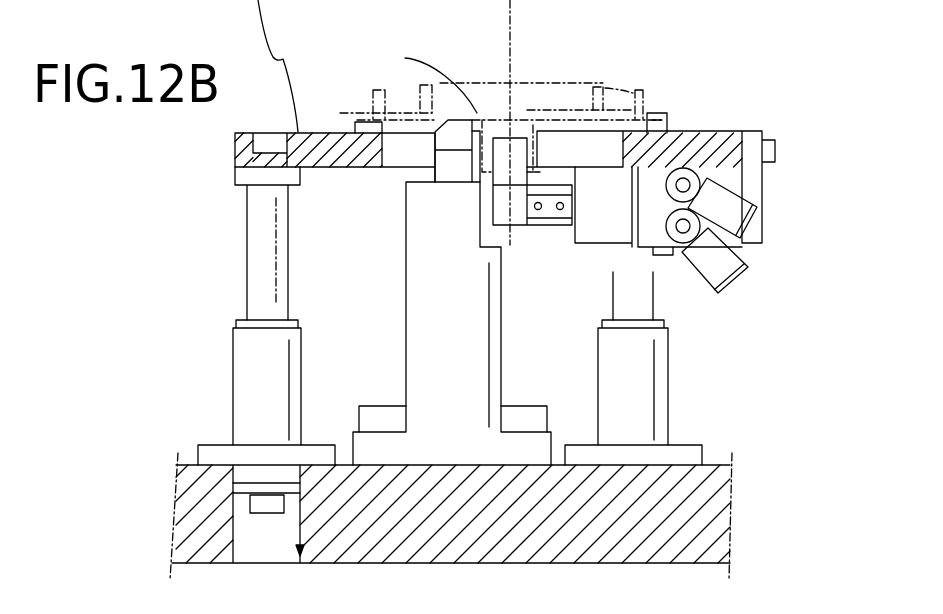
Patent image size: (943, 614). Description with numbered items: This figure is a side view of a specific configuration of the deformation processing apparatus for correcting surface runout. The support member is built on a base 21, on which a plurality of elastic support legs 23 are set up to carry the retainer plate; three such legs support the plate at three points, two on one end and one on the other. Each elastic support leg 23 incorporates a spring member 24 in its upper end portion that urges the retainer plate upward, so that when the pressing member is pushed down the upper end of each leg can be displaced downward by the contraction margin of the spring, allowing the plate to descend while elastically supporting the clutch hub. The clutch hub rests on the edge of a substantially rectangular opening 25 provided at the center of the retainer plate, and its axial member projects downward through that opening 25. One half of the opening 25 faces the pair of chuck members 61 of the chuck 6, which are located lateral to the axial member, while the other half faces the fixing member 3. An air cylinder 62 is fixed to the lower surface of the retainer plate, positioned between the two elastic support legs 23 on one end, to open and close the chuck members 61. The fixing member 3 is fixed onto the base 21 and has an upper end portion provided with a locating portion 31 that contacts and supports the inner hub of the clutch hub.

The fixing member 3 is at (405, 303).
The chuck 6 is at (694, 171).
The base 21 is at (728, 527).
The elastic support legs 23 is at (233, 370).
The spring member 24 is at (247, 208).
The opening 25 is at (403, 153).
The locating portion 31 is at (405, 58).
The chuck members 61 is at (513, 215).
The air cylinder 62 is at (657, 193).